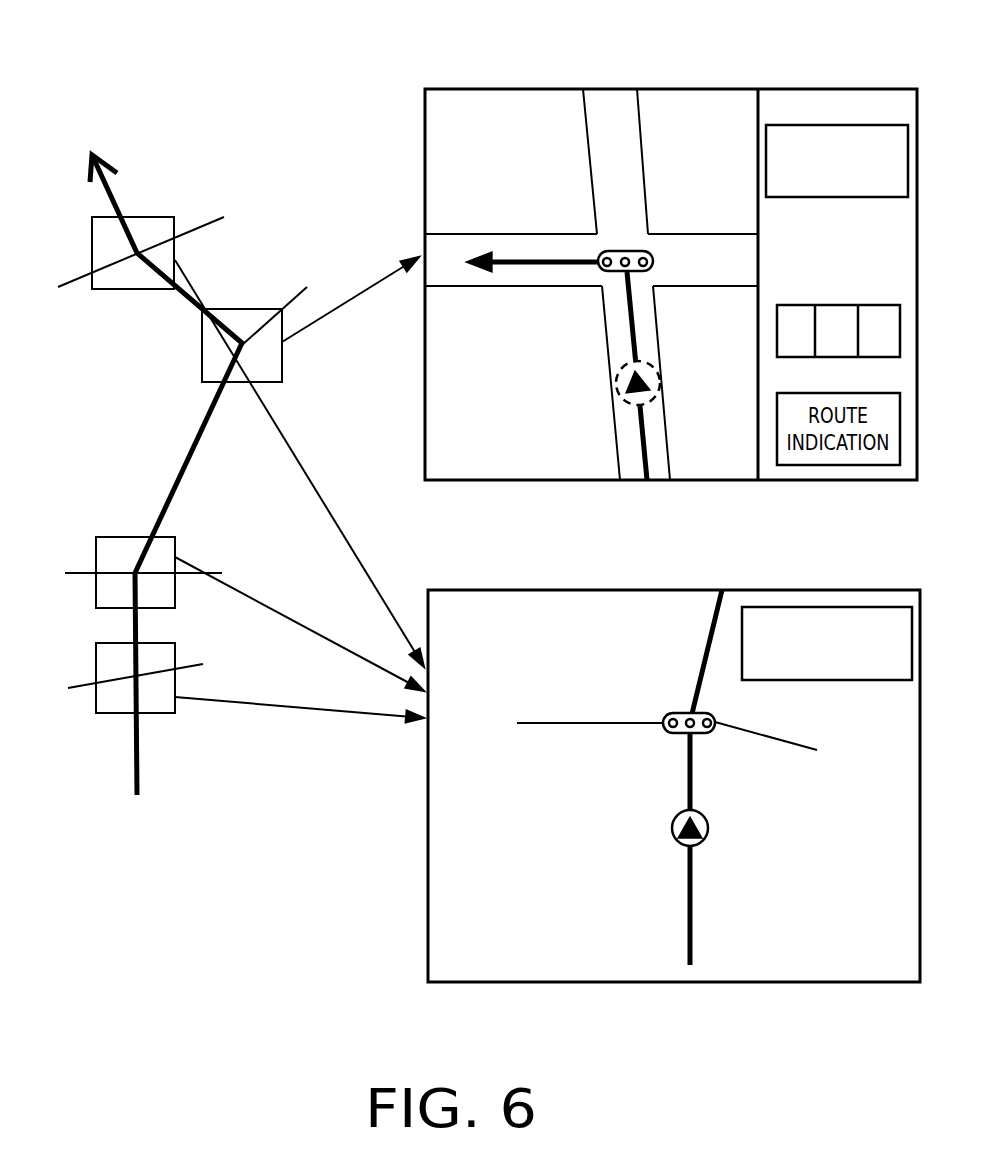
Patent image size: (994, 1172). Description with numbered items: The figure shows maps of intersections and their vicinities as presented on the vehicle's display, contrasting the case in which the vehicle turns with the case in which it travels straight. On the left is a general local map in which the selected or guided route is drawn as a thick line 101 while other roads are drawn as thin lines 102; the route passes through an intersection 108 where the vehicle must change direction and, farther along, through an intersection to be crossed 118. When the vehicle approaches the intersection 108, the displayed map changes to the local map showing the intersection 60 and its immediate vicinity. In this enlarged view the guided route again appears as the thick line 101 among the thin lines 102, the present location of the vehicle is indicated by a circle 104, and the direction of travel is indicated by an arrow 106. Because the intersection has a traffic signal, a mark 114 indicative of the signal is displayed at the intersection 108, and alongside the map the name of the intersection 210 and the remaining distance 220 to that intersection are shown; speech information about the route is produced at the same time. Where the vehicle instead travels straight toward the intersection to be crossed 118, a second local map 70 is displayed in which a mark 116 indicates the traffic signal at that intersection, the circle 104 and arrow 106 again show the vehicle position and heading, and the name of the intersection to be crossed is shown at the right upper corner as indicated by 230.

The local map showing the intersection 60 is at (648, 69).
The local map 70 is at (411, 840).
The thick line 101 is at (182, 472).
The thin lines 102 is at (212, 573).
The circle 104 is at (617, 405).
The arrow 106 is at (647, 372).
The intersection 108 is at (243, 340).
The mark 114 is at (653, 257).
The mark 116 is at (716, 716).
The intersection to be crossed 118 is at (133, 575).
The name of the intersection 210 is at (822, 125).
The remaining distance 220 is at (895, 300).
The name of the intersection to be crossed 230 is at (860, 680).